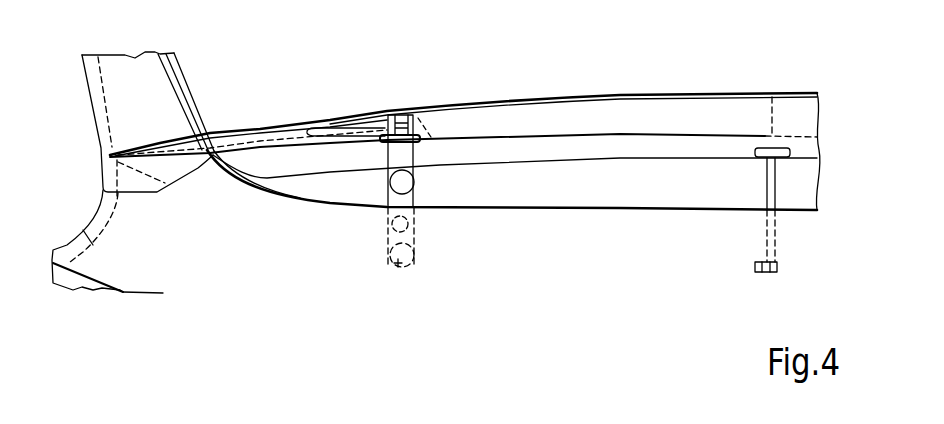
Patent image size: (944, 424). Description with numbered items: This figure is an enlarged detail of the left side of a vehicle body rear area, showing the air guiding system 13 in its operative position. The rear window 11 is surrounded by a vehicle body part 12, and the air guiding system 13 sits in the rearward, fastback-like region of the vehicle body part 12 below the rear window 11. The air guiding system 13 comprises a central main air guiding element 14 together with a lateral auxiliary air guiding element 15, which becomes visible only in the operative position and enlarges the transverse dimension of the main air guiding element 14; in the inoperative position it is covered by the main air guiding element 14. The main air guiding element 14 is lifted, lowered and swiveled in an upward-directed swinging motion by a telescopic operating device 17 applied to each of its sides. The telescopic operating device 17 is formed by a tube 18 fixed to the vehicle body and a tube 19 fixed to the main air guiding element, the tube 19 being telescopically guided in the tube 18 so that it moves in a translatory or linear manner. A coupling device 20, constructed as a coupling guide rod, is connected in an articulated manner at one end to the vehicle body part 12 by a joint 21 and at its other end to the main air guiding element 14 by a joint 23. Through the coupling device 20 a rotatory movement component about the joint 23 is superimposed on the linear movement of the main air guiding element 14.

The rear window 11 is at (335, 98).
The vehicle body part 12 is at (235, 225).
The air guiding system 13 is at (592, 97).
The central main air guiding element 14 is at (517, 97).
The lateral auxiliary air guiding element 15 is at (176, 168).
The telescopic operating device 17 is at (420, 235).
The tube fixed to the vehicle body 18 is at (398, 263).
The tube fixed to the main air guiding element 19 is at (405, 153).
The coupling device 20 is at (767, 187).
The joint 21 is at (780, 268).
The joint 23 is at (777, 150).